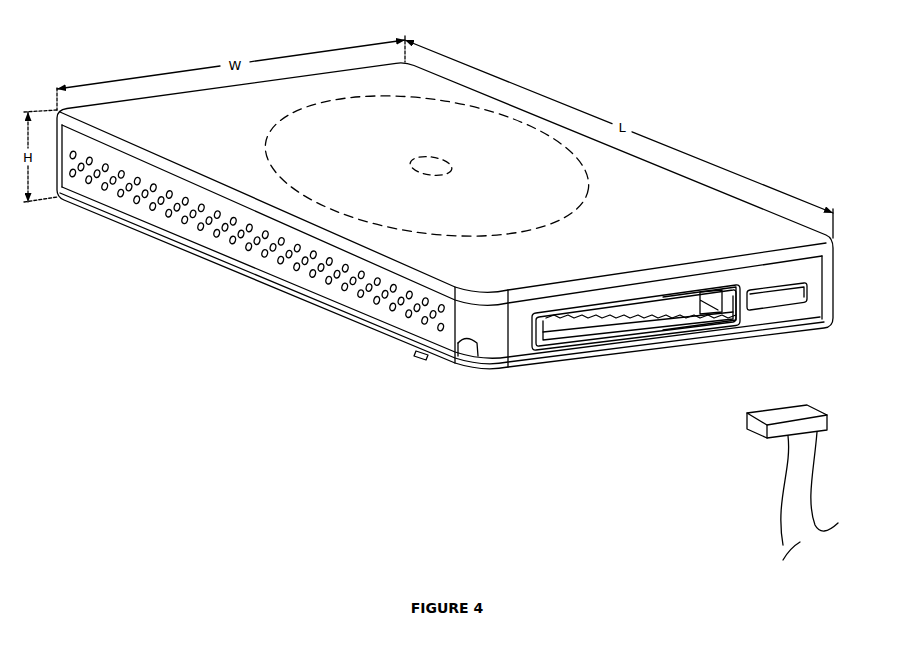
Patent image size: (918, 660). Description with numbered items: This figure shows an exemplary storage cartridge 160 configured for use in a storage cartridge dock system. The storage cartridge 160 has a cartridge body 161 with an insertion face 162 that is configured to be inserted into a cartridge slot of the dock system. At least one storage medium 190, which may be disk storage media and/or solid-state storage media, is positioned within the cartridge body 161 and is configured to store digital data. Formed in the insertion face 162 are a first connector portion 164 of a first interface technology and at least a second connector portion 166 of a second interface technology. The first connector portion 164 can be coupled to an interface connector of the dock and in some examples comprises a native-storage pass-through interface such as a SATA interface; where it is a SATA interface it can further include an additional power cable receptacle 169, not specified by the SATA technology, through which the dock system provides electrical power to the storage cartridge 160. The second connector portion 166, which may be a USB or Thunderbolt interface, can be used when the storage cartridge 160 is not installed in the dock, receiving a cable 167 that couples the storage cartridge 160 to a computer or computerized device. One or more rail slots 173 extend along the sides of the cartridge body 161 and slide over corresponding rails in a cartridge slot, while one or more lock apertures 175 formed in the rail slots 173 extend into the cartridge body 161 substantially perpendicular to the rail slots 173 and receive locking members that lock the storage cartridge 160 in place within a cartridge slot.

The storage cartridge 160 is at (214, 470).
The cartridge body 161 is at (218, 270).
The insertion face 162 is at (485, 286).
The first connector portion 164 is at (742, 346).
The second connector portion 166 is at (780, 302).
The cable 167 is at (797, 478).
The power cable receptacle 169 is at (663, 372).
The rail slot 173 is at (484, 356).
The lock aperture 175 is at (424, 352).
The storage medium 190 is at (582, 208).